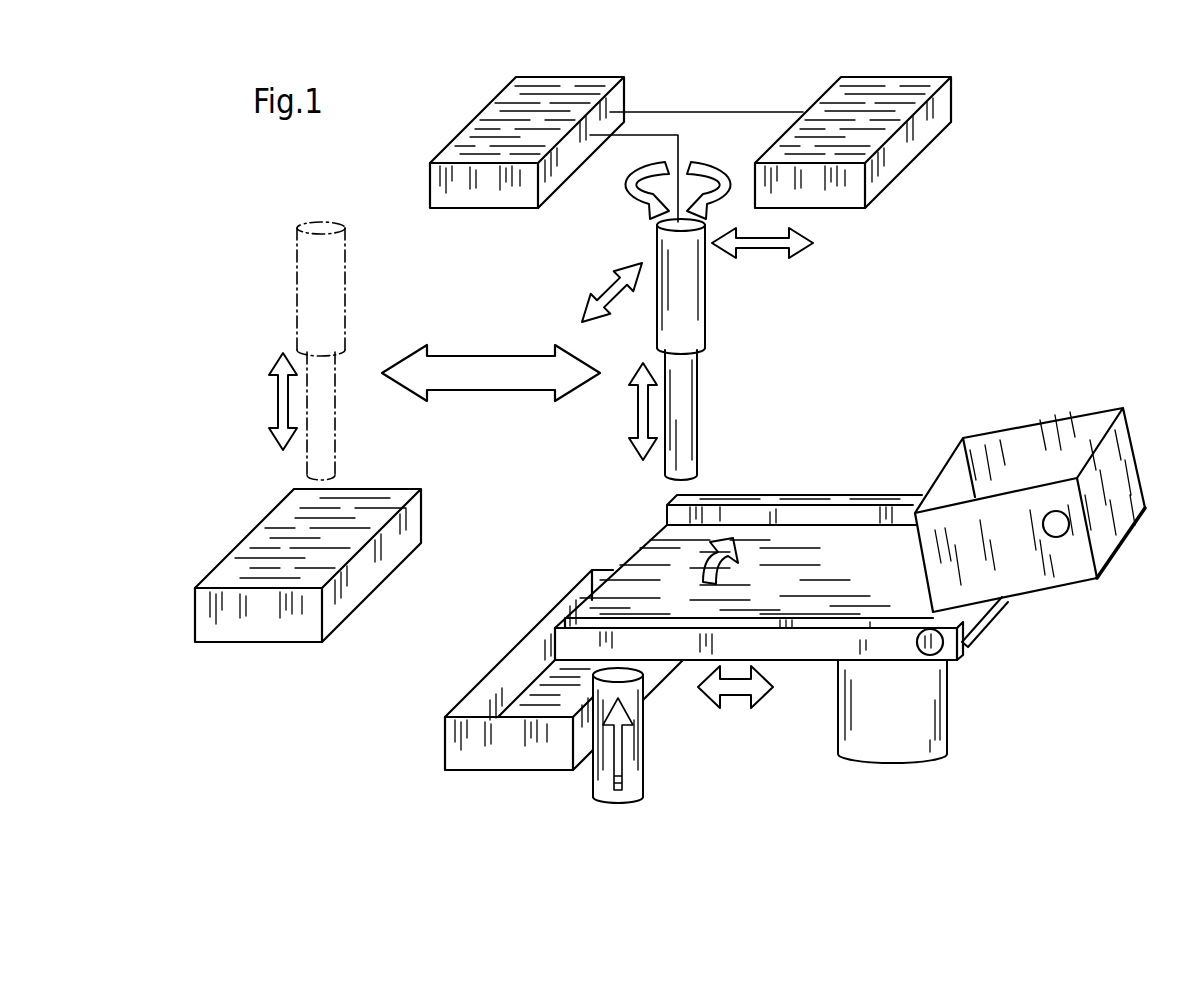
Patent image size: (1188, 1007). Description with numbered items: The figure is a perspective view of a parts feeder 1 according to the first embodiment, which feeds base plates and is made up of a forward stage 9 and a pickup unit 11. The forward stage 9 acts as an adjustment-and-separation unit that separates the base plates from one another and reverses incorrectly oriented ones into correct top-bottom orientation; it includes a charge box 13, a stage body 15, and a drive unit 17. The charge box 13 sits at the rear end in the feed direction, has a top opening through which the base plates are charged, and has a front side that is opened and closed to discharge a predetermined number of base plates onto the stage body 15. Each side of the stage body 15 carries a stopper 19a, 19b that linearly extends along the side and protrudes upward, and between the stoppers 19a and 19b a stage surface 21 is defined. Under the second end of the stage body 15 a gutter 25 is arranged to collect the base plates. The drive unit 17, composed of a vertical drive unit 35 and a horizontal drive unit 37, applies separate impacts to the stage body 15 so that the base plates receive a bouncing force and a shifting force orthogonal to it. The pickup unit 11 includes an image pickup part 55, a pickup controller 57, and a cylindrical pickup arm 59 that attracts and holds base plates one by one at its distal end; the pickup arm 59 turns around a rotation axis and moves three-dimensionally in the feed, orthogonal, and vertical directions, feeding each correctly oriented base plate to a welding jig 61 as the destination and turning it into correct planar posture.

The parts feeder 1 is at (1053, 107).
The forward stage 9 is at (936, 403).
The pickup unit 11 is at (759, 64).
The charge box 13 is at (1135, 448).
The stage body 15 is at (1000, 607).
The drive unit 17 is at (797, 773).
The stopper 19a is at (822, 498).
The stopper 19b is at (832, 622).
The stage surface 21 is at (806, 550).
The gutter 25 is at (508, 658).
The vertical drive unit 35 is at (643, 765).
The horizontal drive unit 37 is at (853, 762).
The image pickup part 55 is at (888, 85).
The pickup controller 57 is at (588, 83).
The pickup arm 59 is at (707, 307).
The welding jig 61 is at (423, 512).